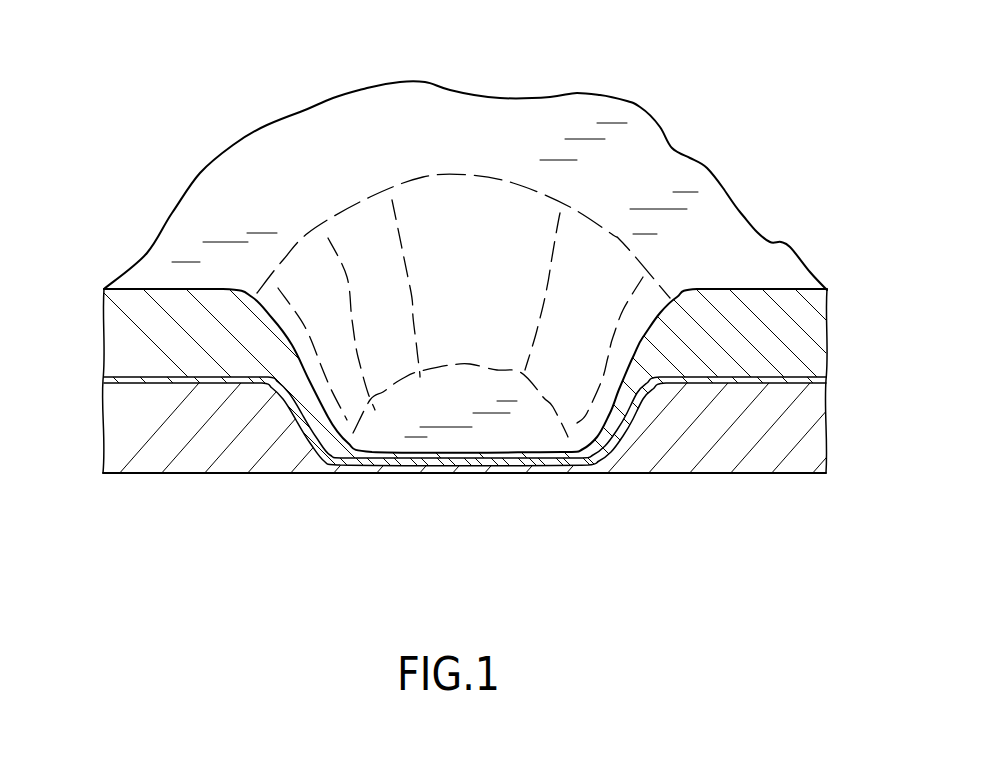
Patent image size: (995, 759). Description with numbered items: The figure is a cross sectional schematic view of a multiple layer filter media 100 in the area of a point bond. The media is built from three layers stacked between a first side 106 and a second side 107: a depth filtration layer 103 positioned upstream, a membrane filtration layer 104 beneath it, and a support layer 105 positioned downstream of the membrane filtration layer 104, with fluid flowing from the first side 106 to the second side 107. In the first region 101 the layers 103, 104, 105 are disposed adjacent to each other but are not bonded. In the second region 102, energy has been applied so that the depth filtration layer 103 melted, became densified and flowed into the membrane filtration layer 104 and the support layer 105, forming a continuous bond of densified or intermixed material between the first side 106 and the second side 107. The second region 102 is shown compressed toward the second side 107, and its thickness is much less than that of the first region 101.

The multiple layer filter media 100 is at (508, 300).
The first region 101 is at (357, 160).
The second region 102 is at (460, 413).
The depth filtration layer 103 is at (125, 332).
The membrane filtration layer 104 is at (126, 382).
The support layer 105 is at (117, 444).
The first side 106 is at (153, 289).
The second side 107 is at (183, 473).